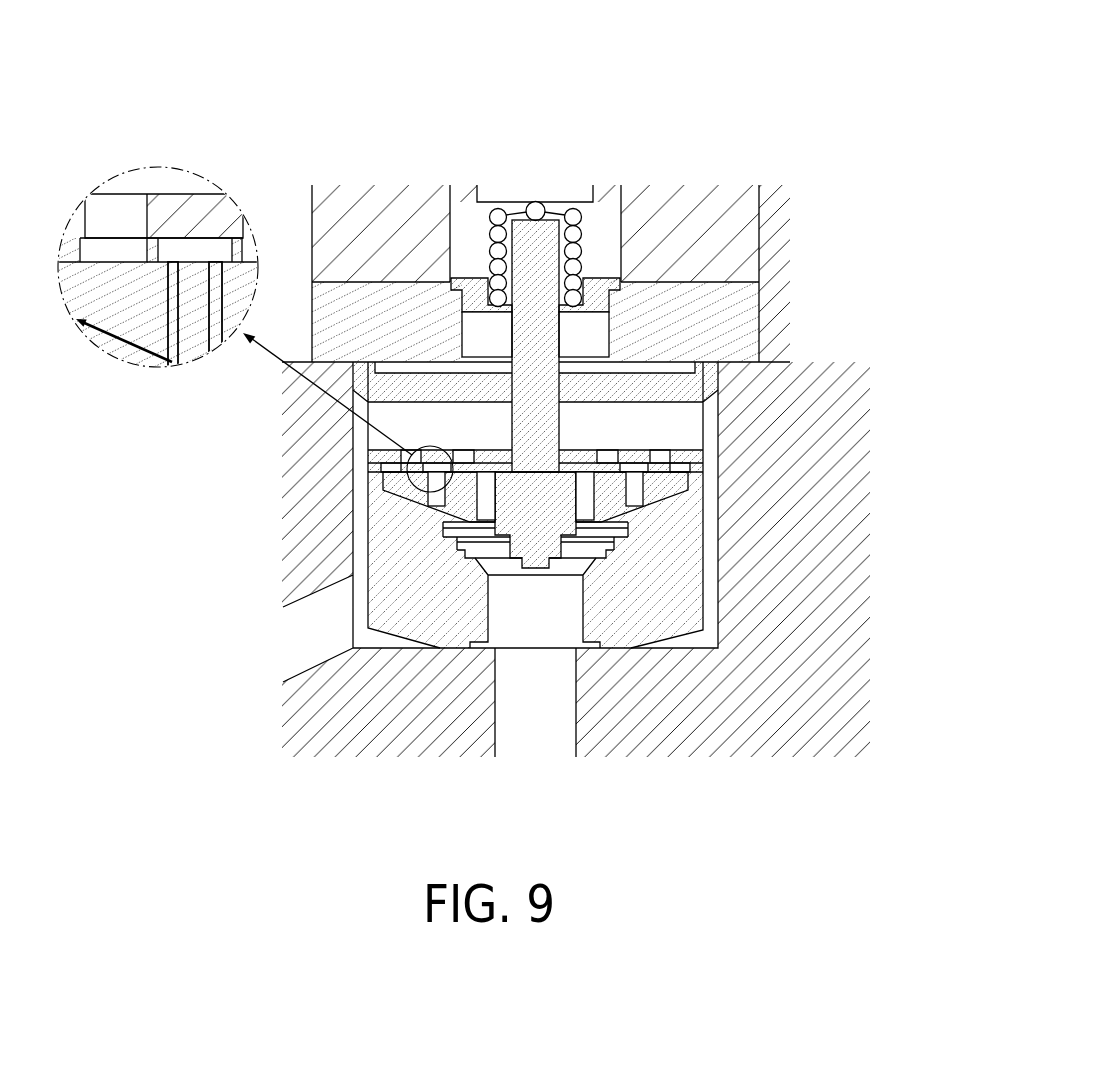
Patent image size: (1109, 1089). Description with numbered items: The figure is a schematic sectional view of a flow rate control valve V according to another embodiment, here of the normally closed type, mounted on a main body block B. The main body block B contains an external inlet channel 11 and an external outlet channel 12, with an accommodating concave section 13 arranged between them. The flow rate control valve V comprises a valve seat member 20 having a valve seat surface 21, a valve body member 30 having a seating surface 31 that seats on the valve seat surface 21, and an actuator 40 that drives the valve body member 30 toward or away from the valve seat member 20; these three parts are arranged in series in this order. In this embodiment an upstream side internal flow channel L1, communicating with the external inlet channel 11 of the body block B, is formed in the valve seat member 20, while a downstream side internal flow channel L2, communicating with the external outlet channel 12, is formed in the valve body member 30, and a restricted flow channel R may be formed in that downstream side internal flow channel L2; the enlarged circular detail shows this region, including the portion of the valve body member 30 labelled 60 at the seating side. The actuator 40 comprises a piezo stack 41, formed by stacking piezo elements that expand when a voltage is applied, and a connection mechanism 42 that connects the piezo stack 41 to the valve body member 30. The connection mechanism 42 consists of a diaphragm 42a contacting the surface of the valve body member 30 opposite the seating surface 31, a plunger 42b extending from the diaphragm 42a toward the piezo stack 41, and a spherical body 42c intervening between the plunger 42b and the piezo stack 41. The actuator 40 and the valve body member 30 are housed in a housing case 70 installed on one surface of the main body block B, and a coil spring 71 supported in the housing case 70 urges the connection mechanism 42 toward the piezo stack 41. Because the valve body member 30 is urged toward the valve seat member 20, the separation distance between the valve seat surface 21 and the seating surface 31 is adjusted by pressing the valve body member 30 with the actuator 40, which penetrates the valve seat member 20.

The external inlet channel 11 is at (318, 618).
The external outlet channel 12 is at (518, 707).
The accommodating concave section 13 is at (680, 650).
The valve seat member 20 is at (720, 408).
The valve seat surface 21 is at (605, 462).
The valve body member 30 is at (680, 505).
The seating surface 31 is at (455, 450).
The actuator 40 is at (602, 222).
The piezo stack 41 is at (560, 187).
The connection mechanism 42 is at (698, 265).
The diaphragm 42a is at (590, 355).
The plunger 42b is at (607, 277).
The spherical body 42c is at (600, 203).
The disc body 60 is at (194, 348).
The housing case 70 is at (306, 200).
The coil spring 71 is at (478, 203).
The main body block B is at (773, 730).
The upstream side internal flow channel L1 is at (647, 414).
The downstream side internal flow channel L2 is at (643, 488).
The restricted flow channel R is at (214, 338).
The flow rate control valve V is at (737, 68).